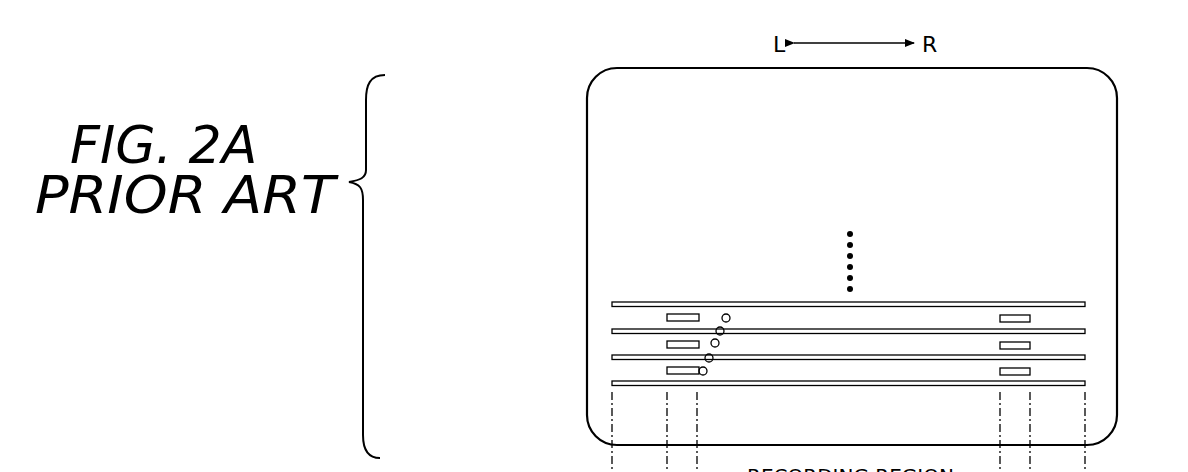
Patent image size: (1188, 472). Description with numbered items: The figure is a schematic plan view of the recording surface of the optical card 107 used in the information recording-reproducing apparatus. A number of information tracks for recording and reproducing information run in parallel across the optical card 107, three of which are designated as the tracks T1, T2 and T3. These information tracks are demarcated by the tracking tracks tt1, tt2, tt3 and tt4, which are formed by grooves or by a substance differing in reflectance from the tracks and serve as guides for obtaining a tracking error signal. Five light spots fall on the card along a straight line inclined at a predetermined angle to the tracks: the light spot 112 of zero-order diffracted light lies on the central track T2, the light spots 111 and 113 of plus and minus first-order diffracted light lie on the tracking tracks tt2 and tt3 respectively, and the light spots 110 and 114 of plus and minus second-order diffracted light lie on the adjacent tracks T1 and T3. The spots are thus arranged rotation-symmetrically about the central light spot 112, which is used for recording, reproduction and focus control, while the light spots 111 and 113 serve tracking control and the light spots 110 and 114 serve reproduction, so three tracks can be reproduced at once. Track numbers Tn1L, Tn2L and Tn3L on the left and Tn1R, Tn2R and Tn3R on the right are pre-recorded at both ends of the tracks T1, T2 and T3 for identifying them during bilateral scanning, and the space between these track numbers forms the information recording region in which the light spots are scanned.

The optical card 107 is at (1017, 67).
The light spot of second-order diffracted light 110 is at (705, 375).
The light spot of first-order diffracted light 111 is at (713, 360).
The light spot of 0-order diffracted light 112 is at (719, 344).
The light spot of first-order diffracted light 113 is at (725, 331).
The light spot of second-order diffracted light 114 is at (727, 314).
The tracking track tt1 is at (612, 383).
The tracking track tt2 is at (612, 357).
The tracking track tt3 is at (612, 331).
The tracking track tt4 is at (612, 304).
The track number Tn1L is at (667, 372).
The track number Tn2L is at (668, 344).
The track number Tn3L is at (687, 314).
The track number Tn1R is at (1000, 371).
The track number Tn2R is at (1000, 344).
The track number Tn3R is at (1010, 315).
The information track T1 is at (1077, 374).
The information track T2 is at (1077, 347).
The information track T3 is at (1077, 318).